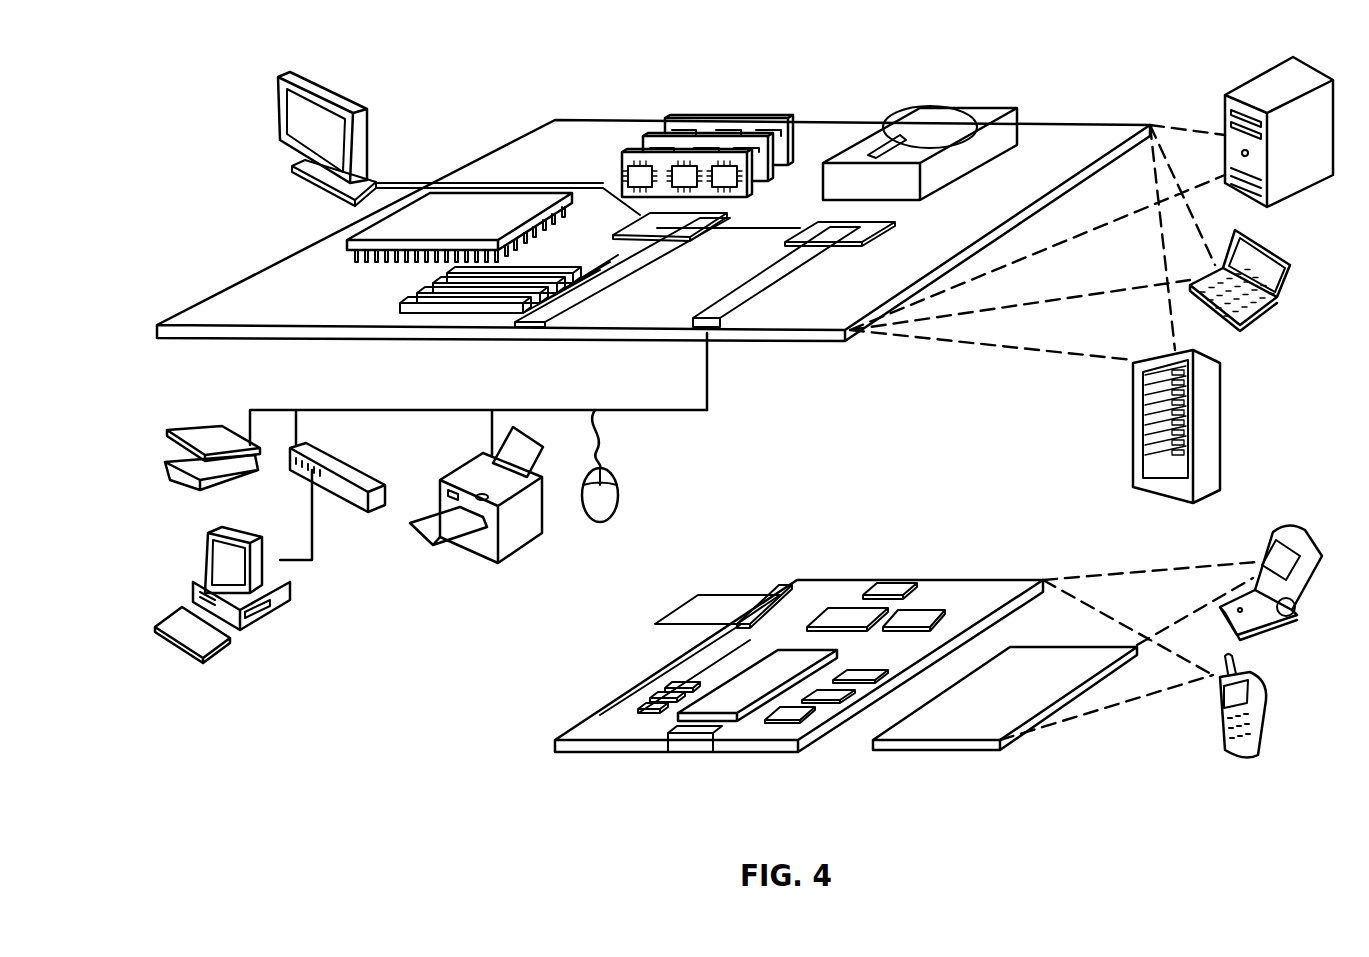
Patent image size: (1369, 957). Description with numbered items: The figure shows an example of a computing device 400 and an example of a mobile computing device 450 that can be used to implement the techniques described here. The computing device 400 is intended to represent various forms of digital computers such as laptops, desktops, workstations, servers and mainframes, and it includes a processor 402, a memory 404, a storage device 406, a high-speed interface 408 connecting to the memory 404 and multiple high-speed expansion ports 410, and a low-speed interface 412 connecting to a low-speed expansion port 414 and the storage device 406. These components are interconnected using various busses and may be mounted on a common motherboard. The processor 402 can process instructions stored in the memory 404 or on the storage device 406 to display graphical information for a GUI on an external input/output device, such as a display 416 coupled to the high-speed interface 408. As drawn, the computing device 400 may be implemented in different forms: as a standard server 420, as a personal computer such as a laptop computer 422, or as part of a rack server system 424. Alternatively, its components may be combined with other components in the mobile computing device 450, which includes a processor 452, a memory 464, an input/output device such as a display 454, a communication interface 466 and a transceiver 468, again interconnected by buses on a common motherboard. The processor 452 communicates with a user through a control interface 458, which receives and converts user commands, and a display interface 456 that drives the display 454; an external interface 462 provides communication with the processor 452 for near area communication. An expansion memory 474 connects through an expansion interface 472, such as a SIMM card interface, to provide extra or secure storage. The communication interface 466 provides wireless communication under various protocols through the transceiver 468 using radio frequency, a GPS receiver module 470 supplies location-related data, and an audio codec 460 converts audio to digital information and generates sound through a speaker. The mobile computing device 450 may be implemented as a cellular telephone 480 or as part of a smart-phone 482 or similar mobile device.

The computing device 400 is at (478, 90).
The processor 402 is at (350, 242).
The memory 404 is at (680, 115).
The storage device 406 is at (917, 107).
The high-speed interface 408 is at (648, 225).
The high-speed expansion ports 410 is at (418, 299).
The low-speed interface 412 is at (820, 225).
The low-speed expansion port 414 is at (712, 327).
The display 416 is at (280, 76).
The standard server 420 is at (1227, 112).
The laptop computer 422 is at (1296, 257).
The rack server system 424 is at (1136, 453).
The mobile computing device 450 is at (527, 745).
The processor 452 is at (730, 712).
The display 454 is at (967, 725).
The display interface 456 is at (800, 718).
The control interface 458 is at (830, 694).
The audio codec 460 is at (857, 673).
The external interface 462 is at (696, 743).
The memory 464 is at (646, 703).
The communication interface 466 is at (851, 618).
The transceiver 468 is at (927, 620).
The GPS receiver module 470 is at (903, 592).
The expansion interface 472 is at (780, 591).
The expansion memory 474 is at (705, 594).
The cellular telephone 480 is at (1281, 542).
The smart-phone 482 is at (1213, 713).